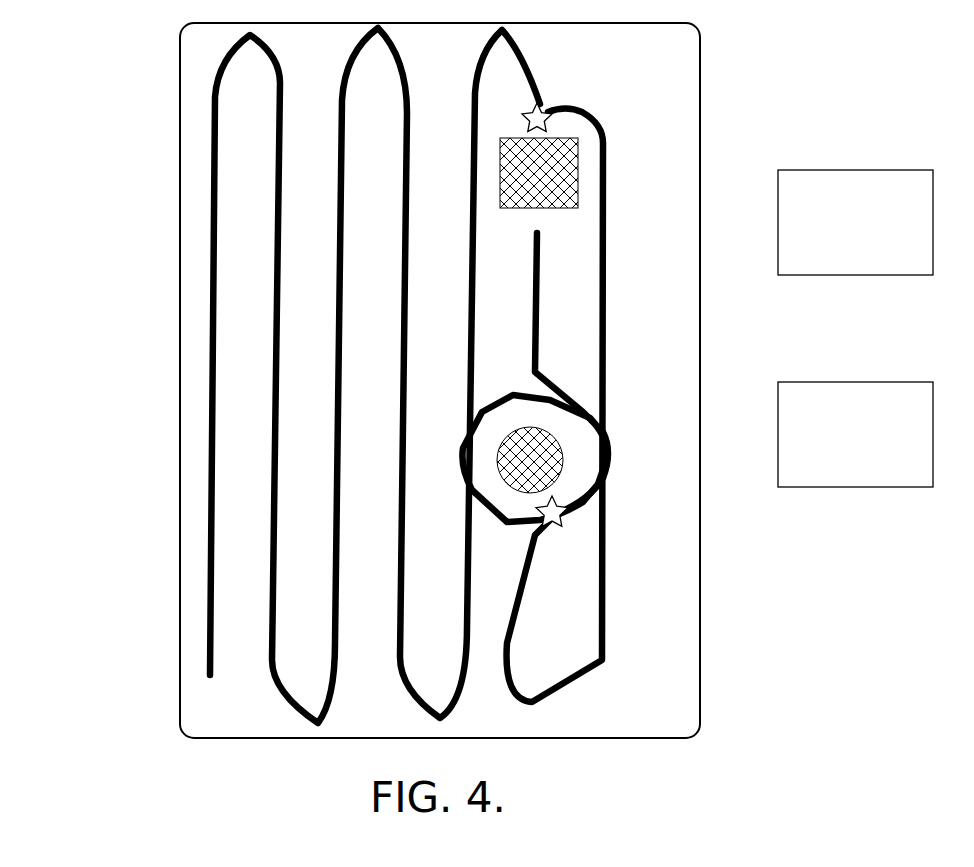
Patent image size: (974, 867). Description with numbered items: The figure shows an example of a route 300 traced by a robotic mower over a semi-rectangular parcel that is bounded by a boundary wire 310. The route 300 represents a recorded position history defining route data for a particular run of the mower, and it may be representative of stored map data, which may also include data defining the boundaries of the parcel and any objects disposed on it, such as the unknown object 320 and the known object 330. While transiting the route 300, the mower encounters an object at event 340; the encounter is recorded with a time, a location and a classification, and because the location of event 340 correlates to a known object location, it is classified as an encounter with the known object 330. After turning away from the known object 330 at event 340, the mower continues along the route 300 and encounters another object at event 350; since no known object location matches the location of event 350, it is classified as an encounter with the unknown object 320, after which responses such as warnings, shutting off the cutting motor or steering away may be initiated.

The route 300 is at (213, 225).
The boundary wire 310 is at (180, 498).
The unknown object 320 is at (508, 482).
The known object 330 is at (522, 192).
The event 340 is at (543, 106).
The event 350 is at (551, 522).